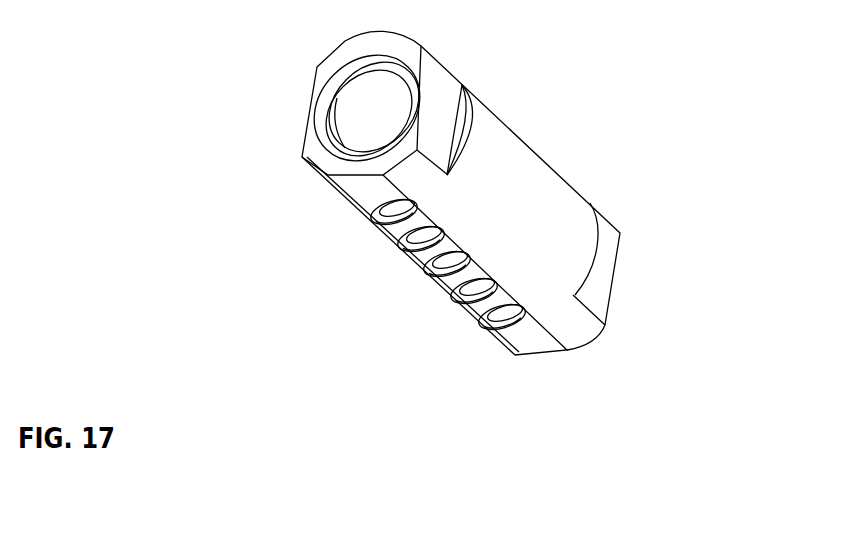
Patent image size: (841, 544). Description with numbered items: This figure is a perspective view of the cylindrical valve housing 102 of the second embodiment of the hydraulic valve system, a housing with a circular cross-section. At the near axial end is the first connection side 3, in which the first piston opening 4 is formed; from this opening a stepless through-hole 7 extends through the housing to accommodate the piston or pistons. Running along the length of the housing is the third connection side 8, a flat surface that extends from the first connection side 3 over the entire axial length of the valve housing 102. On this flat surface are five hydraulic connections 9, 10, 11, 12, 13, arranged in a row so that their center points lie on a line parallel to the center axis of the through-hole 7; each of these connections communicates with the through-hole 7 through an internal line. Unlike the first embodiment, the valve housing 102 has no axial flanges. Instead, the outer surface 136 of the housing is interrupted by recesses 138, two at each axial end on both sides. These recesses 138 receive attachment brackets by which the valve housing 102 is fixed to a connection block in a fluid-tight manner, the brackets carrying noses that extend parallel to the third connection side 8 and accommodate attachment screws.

The first connection side 3 is at (345, 53).
The first piston opening 4 is at (320, 107).
The through-hole 7 is at (355, 133).
The third connection side 8 is at (343, 188).
The hydraulic connection 9 is at (378, 212).
The hydraulic connection 10 is at (405, 238).
The hydraulic connection 11 is at (433, 268).
The hydraulic connection 12 is at (458, 288).
The hydraulic connection 13 is at (487, 315).
The valve housing 102 is at (356, 208).
The outer surface 136 is at (492, 170).
The recess 138 is at (423, 105).